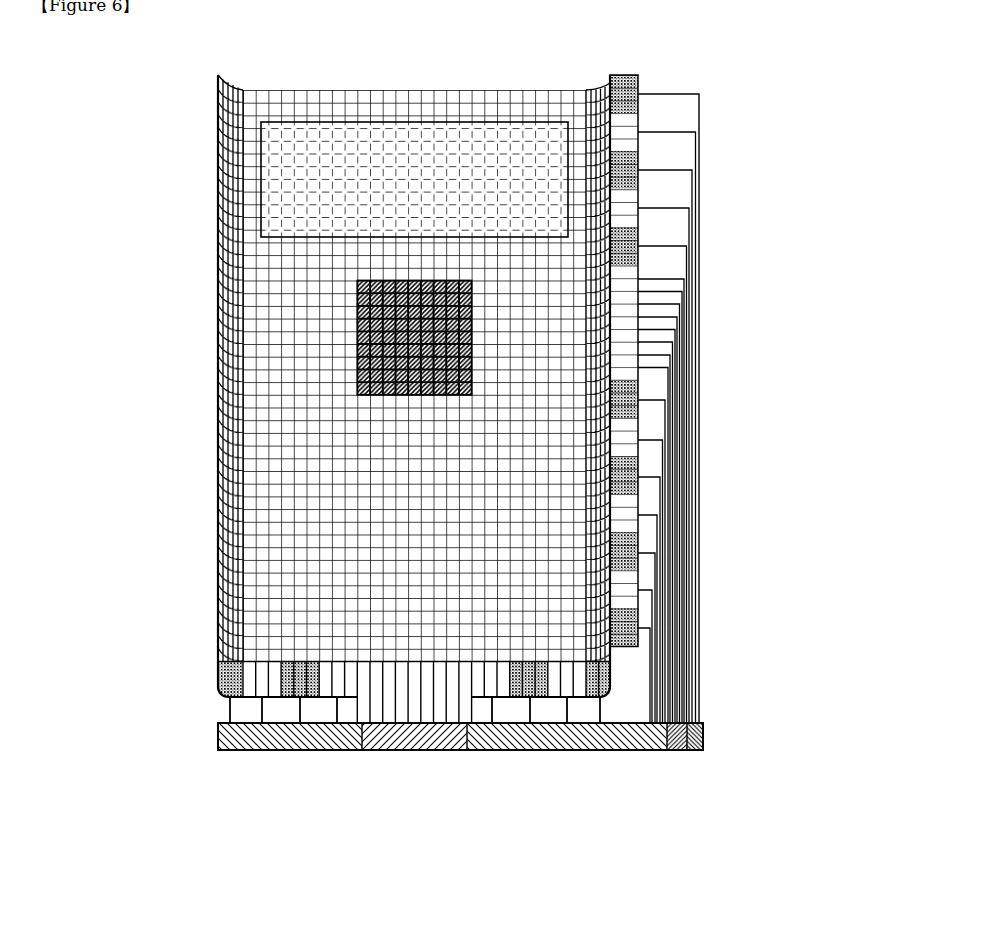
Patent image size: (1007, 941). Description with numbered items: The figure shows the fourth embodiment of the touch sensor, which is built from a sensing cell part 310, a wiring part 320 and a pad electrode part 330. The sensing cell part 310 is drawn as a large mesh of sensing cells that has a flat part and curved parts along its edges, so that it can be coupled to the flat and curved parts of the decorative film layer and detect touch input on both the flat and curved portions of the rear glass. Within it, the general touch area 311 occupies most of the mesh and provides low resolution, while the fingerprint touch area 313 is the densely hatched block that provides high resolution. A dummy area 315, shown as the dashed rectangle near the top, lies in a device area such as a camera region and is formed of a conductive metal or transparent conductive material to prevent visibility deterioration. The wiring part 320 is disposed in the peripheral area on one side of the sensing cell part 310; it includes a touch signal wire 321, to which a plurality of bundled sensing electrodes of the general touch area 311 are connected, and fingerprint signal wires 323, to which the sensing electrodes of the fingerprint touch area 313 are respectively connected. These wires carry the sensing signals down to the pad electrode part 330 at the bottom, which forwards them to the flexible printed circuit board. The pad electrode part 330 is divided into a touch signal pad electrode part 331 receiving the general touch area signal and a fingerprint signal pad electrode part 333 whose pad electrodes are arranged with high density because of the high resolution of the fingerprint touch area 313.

The sensing cell part 310 is at (319, 379).
The general touch area 311 is at (250, 173).
The fingerprint touch area 313 is at (358, 340).
The dummy area 315 is at (492, 142).
The wiring part 320 is at (746, 385).
The touch signal wire 321 is at (686, 93).
The fingerprint signal wire 323 is at (671, 278).
The pad electrode part 330 is at (460, 820).
The touch signal pad electrode part 331 is at (583, 750).
The fingerprint signal pad electrode part 333 is at (673, 750).